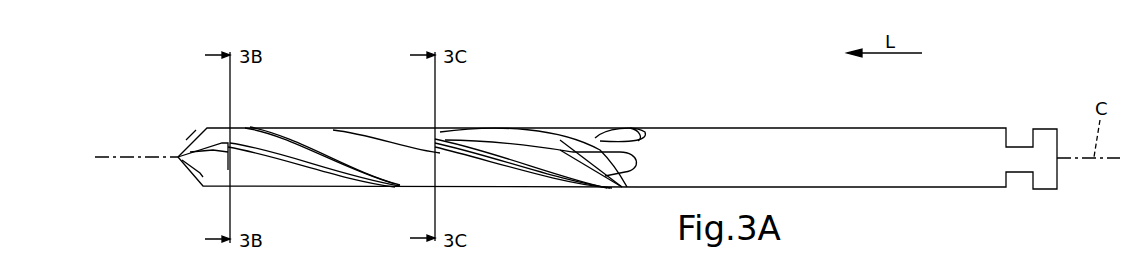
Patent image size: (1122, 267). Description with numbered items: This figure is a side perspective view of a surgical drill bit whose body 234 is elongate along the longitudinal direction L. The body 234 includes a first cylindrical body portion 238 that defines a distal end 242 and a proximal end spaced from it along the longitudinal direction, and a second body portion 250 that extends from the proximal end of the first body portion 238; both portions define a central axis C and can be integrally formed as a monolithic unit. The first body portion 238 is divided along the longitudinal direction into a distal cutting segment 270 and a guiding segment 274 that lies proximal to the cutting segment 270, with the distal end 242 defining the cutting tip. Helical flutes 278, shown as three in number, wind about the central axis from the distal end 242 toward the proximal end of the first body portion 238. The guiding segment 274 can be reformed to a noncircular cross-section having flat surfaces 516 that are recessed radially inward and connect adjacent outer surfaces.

The body 234 is at (508, 150).
The first cylindrical body portion 238 is at (645, 132).
The distal end 242 is at (178, 157).
The second body portion 250 is at (718, 155).
The distal cutting segment 270 is at (213, 158).
The guiding segment 274 is at (473, 140).
The helical flutes 278 is at (372, 132).
The flat surfaces 516 is at (427, 158).